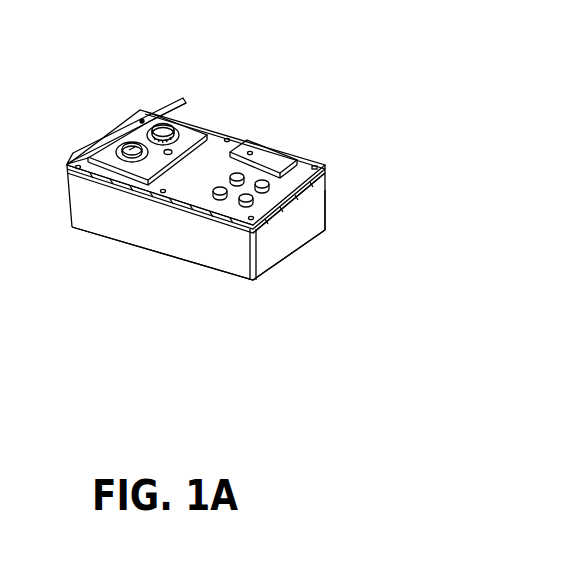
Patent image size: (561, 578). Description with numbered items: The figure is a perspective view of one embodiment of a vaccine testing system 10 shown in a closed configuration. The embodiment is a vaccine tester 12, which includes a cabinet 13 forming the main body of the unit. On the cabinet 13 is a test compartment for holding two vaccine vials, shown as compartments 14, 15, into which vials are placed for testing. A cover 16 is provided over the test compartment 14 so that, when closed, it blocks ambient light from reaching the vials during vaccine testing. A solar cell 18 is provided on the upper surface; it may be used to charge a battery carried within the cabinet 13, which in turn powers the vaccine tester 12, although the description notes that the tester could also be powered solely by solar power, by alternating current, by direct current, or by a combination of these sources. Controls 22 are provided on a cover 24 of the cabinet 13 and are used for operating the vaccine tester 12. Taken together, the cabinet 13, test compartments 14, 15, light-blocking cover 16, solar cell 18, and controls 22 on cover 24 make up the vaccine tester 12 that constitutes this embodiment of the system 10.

The electronic device 10 is at (300, 89).
The vaccine tester 12 is at (324, 156).
The cabinet 13 is at (318, 218).
The test compartment 14 is at (183, 126).
The test compartment 15 is at (120, 163).
The cover 16 is at (150, 113).
The solar cell 18 is at (294, 155).
The controls 22 is at (217, 203).
The cover 24 is at (292, 181).